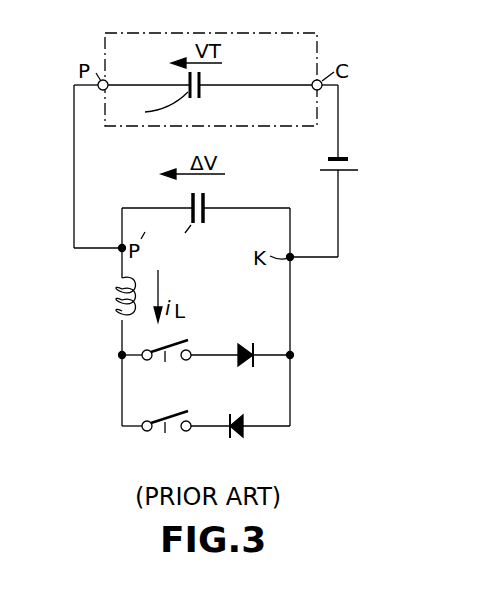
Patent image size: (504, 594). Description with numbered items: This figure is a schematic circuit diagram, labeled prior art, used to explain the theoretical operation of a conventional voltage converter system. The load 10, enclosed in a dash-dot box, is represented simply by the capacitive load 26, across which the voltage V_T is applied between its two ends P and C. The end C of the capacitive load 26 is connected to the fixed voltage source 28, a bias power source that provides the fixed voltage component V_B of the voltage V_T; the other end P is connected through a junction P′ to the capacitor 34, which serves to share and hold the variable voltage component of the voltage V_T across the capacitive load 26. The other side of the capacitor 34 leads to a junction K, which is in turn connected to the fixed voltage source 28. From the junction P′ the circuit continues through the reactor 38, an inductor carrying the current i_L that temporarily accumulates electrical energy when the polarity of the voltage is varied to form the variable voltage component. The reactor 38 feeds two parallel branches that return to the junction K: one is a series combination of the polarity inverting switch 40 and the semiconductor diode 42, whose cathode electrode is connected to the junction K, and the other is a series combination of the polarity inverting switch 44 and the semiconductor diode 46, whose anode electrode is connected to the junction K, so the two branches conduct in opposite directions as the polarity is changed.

The load 10 is at (307, 26).
The capacitive load 26 is at (201, 88).
The fixed voltage source 28 is at (345, 158).
The capacitor 34 is at (206, 223).
The reactor 38 is at (110, 293).
The polarity inverting switch 40 is at (156, 368).
The semiconductor diode 42 is at (238, 362).
The polarity inverting switch 44 is at (156, 440).
The semiconductor diode 46 is at (233, 437).